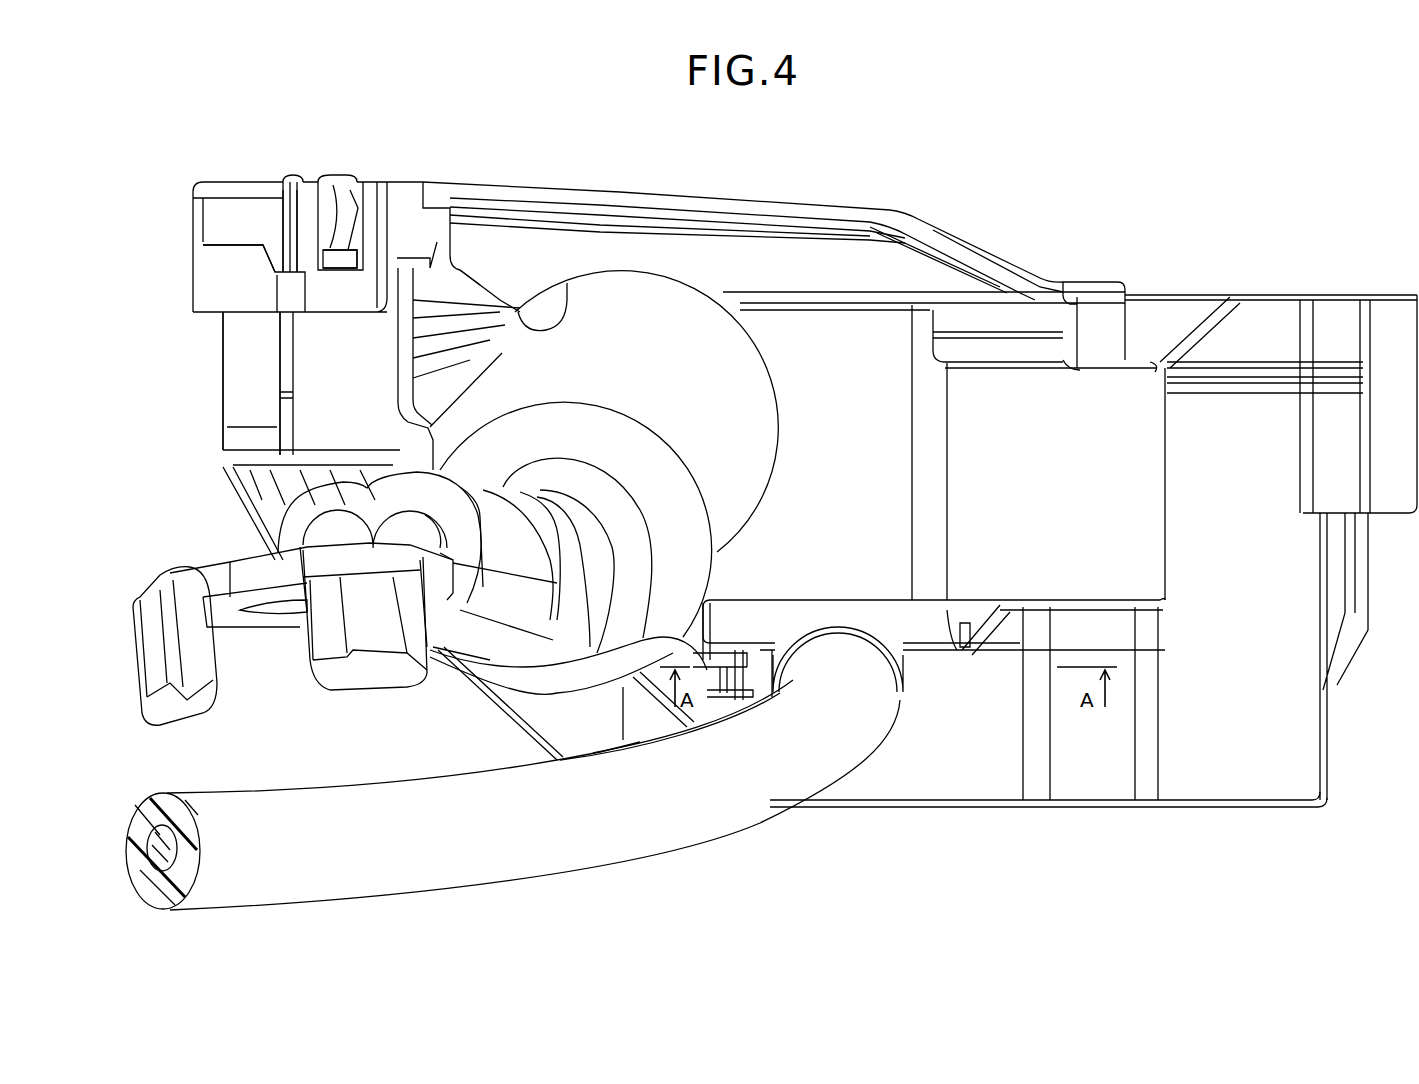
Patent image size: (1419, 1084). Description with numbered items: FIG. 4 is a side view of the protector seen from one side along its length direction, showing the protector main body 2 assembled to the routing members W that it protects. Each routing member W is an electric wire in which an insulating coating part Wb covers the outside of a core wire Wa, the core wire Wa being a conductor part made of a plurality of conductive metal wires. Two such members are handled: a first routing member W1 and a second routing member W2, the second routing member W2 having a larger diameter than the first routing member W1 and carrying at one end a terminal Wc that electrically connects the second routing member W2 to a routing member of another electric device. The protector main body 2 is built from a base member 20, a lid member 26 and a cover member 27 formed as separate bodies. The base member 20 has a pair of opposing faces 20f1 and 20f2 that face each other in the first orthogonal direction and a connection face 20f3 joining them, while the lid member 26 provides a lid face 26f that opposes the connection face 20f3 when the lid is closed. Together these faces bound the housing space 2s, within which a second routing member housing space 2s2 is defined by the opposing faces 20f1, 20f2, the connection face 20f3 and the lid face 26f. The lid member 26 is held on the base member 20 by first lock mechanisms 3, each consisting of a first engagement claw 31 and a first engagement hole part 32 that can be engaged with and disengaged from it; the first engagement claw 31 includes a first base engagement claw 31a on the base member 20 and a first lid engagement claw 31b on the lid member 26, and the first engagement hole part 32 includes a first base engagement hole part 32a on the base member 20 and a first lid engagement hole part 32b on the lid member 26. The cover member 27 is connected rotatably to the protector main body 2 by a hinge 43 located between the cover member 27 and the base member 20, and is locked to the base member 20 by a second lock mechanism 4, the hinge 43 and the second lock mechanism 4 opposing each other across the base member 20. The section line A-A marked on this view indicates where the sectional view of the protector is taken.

The protector main body 2 is at (761, 444).
The base member 20 is at (330, 380).
The opposing face 20f1 is at (887, 357).
The opposing face 20f2 is at (520, 310).
The connection face 20f3 is at (713, 600).
The lid member 26 is at (528, 183).
The lid face 26f is at (567, 290).
The cover member 27 is at (883, 600).
The housing space 2s is at (1096, 462).
The second routing member housing space 2s2 is at (793, 343).
The first lock mechanism 3 is at (425, 100).
The first engagement claw 31 is at (246, 279).
The first base engagement claw 31a is at (348, 232).
The first lid engagement claw 31b is at (243, 337).
The first engagement hole part 32 is at (211, 187).
The first base engagement hole part 32a is at (298, 243).
The first lid engagement hole part 32b is at (345, 202).
The second lock mechanism 4 is at (953, 647).
The hinge 43 is at (597, 695).
The routing member W is at (513, 540).
The first routing member W1 is at (515, 847).
The second routing member W2 is at (640, 303).
The core wire Wa is at (157, 870).
The insulating coating part Wb is at (233, 880).
The terminal Wc is at (137, 657).